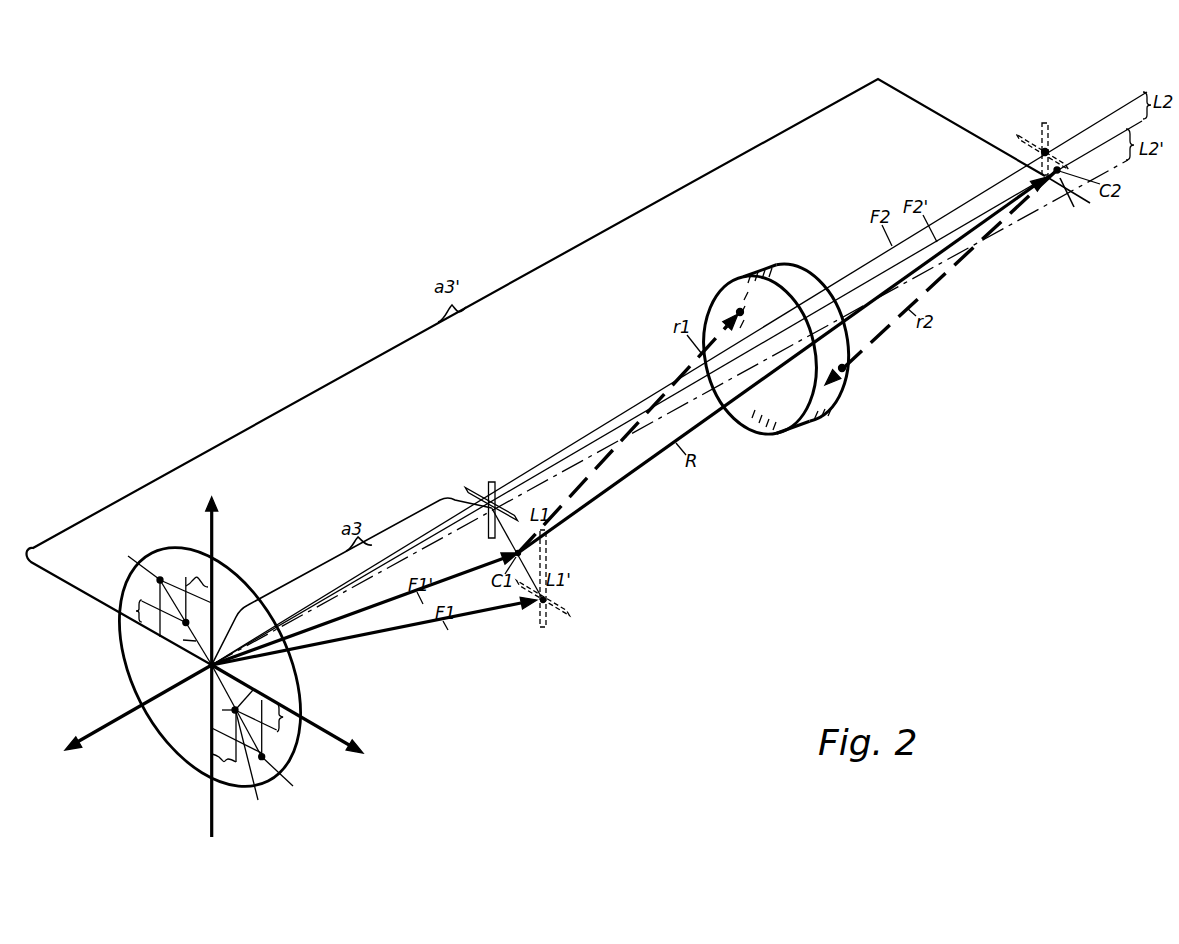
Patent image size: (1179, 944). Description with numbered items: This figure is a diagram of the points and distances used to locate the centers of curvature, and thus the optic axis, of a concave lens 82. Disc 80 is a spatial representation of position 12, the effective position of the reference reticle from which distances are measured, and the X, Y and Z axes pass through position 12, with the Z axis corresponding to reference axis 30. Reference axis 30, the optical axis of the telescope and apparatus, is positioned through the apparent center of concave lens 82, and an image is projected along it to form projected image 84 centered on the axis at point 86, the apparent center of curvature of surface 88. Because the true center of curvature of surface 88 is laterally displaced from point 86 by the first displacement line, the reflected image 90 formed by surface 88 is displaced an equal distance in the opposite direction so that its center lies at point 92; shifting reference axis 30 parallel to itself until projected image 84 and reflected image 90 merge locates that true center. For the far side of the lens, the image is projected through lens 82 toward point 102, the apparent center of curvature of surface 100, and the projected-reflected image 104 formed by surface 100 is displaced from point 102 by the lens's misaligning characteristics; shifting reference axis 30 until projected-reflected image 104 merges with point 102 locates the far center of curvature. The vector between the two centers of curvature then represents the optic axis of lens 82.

The position 12 is at (207, 665).
The reference axis 30 is at (1025, 217).
The disc 80 is at (123, 657).
The concave lens 82 is at (835, 408).
The projected image 84 is at (477, 489).
The point 86 is at (490, 510).
The surface 88 is at (783, 421).
The reflected image 90 is at (565, 598).
The point 92 is at (548, 599).
The surface 100 is at (842, 379).
The point 102 is at (1068, 195).
The projected-reflected image 104 is at (1042, 148).